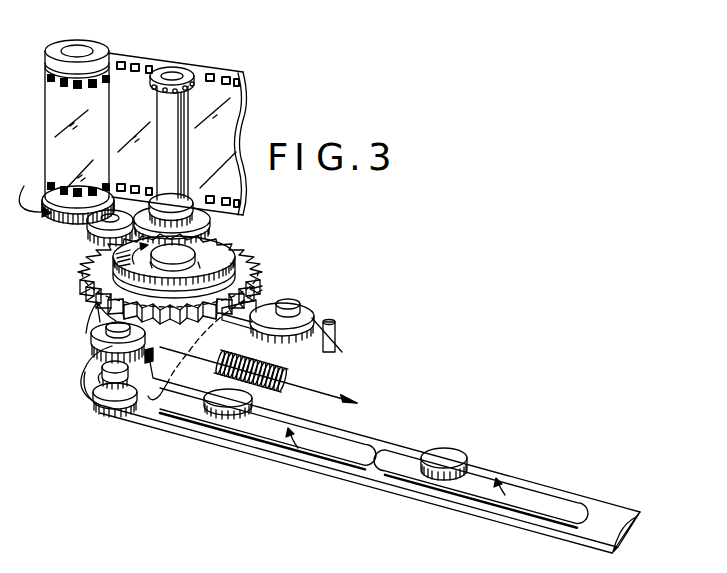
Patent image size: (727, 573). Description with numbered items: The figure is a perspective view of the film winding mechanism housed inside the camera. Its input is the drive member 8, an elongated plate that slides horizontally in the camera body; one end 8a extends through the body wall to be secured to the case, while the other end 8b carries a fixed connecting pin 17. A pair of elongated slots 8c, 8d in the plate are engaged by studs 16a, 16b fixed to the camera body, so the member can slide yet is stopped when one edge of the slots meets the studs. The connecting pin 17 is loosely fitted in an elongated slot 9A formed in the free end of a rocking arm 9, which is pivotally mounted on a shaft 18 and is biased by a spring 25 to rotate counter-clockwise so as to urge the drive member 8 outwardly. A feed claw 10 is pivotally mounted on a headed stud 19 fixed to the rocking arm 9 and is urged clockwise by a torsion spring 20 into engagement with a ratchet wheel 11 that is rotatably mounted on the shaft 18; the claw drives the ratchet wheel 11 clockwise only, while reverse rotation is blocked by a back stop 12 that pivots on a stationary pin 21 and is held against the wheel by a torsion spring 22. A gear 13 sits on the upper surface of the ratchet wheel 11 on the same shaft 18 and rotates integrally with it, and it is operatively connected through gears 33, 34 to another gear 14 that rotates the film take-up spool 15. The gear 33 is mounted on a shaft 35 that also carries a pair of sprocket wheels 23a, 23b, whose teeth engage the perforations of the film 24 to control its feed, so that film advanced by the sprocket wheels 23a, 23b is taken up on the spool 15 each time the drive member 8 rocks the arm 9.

The drive member 8 is at (349, 458).
The one end of drive member 8a is at (595, 520).
The other end of drive member 8b is at (95, 397).
The elongated slot 8c is at (298, 448).
The elongated slot 8d is at (505, 495).
The rocking arm 9 is at (95, 382).
The elongated slot 9A is at (135, 406).
The feed claw 10 is at (90, 306).
The ratchet wheel 11 is at (90, 262).
The back stop 12 is at (278, 312).
The gear 13 is at (250, 262).
The gear 14 is at (57, 190).
The film take-up spool 15 is at (78, 48).
The stud 16a is at (225, 405).
The stud 16b is at (440, 470).
The connecting pin 17 is at (100, 366).
The shaft 18 is at (183, 258).
The headed stud 19 is at (91, 346).
The torsion spring 20 is at (88, 318).
The stationary pin 21 is at (293, 303).
The torsion spring 22 is at (326, 334).
The sprocket wheel 23a is at (181, 70).
The sprocket wheel 23b is at (158, 201).
The film 24 is at (134, 72).
The spring 25 is at (247, 362).
The gear 33 is at (210, 222).
The gear 34 is at (88, 232).
The shaft 35 is at (163, 118).